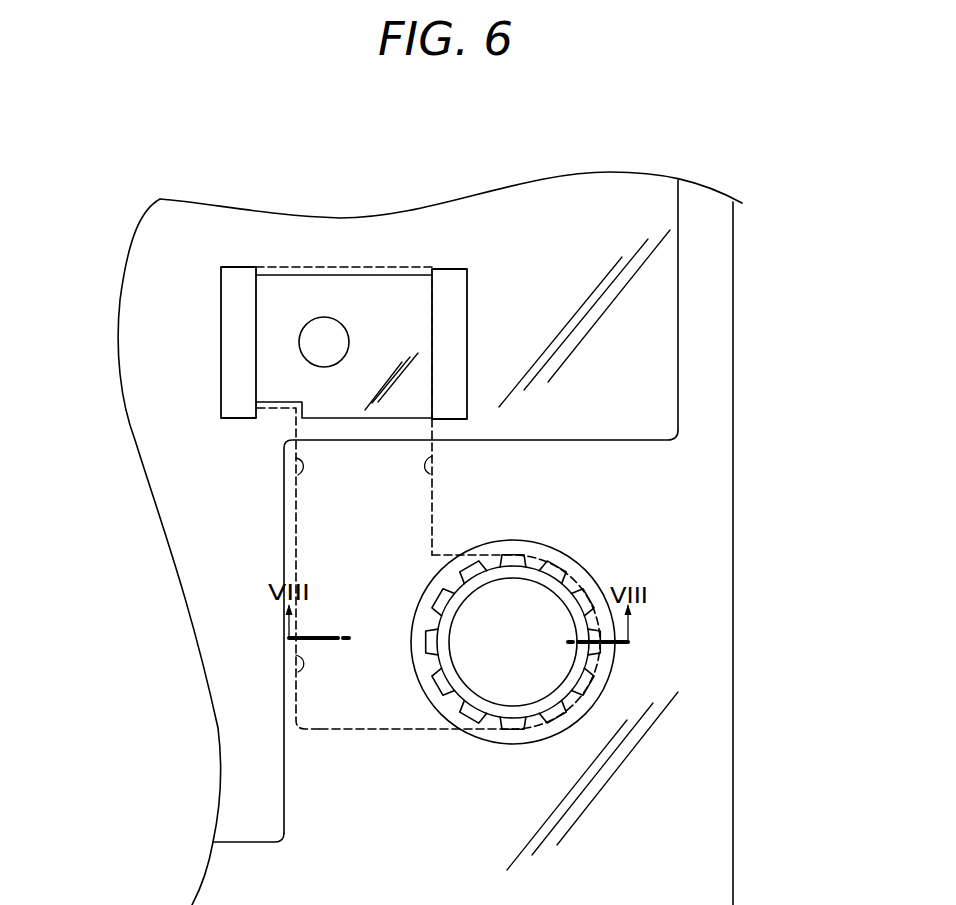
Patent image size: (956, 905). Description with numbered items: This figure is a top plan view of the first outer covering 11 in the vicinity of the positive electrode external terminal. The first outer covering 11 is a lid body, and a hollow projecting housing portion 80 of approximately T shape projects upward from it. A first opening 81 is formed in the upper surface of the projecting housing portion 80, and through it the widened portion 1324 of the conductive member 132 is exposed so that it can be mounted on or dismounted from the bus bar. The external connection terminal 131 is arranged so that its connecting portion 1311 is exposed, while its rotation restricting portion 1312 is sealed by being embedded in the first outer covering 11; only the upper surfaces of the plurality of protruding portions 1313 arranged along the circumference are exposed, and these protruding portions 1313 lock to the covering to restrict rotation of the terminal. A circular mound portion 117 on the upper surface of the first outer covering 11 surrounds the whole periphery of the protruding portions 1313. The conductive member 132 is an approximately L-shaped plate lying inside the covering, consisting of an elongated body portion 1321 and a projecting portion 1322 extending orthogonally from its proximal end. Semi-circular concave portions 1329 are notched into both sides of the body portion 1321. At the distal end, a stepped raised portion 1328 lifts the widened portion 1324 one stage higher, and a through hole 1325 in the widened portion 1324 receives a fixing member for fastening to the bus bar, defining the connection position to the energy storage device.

The first outer covering 11 is at (736, 380).
The projecting housing portion 80 is at (652, 338).
The first opening 81 is at (227, 352).
The mound portion 117 is at (585, 573).
The external connection terminal 131 is at (513, 602).
The conductive member 132 is at (438, 285).
The connecting portion 1311 is at (525, 582).
The rotation restricting portion 1312 is at (482, 735).
The protruding portions 1313 is at (470, 568).
The body portion 1321 is at (313, 507).
The projecting portion 1322 is at (535, 718).
The widened portion 1324 is at (273, 308).
The through hole 1325 is at (327, 321).
The raised portion 1328 is at (427, 433).
The concave portions 1329 is at (299, 468).